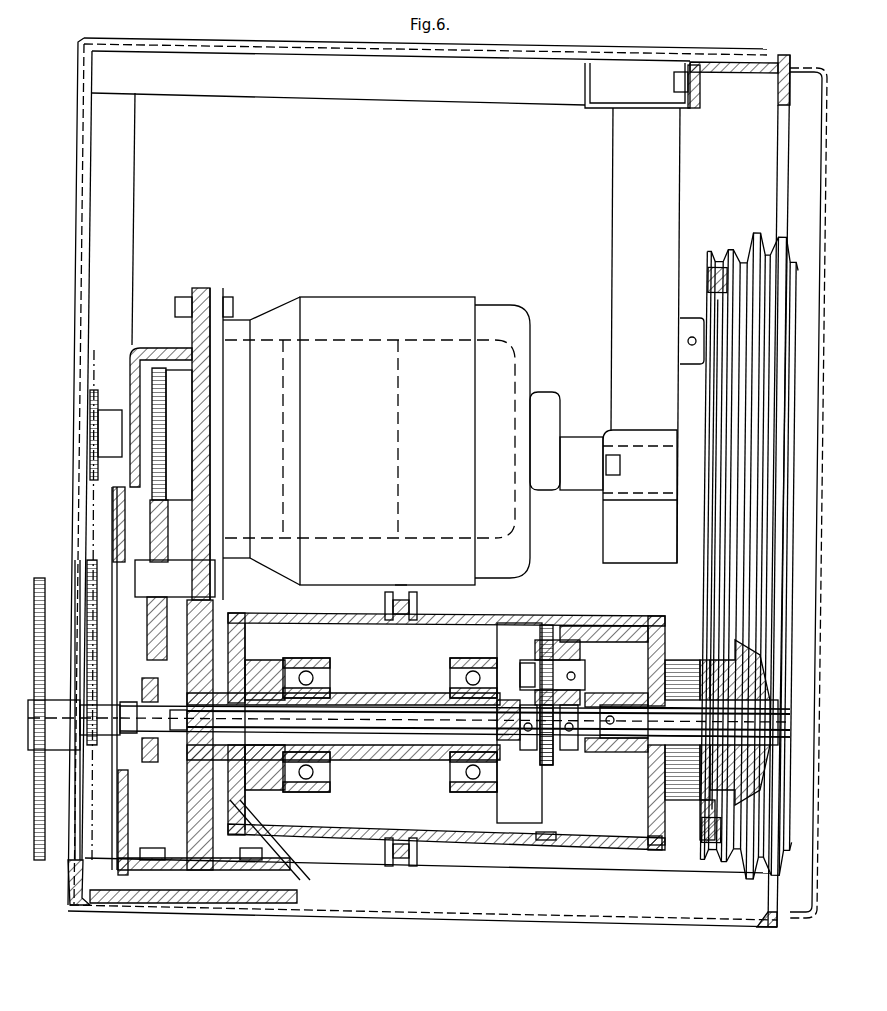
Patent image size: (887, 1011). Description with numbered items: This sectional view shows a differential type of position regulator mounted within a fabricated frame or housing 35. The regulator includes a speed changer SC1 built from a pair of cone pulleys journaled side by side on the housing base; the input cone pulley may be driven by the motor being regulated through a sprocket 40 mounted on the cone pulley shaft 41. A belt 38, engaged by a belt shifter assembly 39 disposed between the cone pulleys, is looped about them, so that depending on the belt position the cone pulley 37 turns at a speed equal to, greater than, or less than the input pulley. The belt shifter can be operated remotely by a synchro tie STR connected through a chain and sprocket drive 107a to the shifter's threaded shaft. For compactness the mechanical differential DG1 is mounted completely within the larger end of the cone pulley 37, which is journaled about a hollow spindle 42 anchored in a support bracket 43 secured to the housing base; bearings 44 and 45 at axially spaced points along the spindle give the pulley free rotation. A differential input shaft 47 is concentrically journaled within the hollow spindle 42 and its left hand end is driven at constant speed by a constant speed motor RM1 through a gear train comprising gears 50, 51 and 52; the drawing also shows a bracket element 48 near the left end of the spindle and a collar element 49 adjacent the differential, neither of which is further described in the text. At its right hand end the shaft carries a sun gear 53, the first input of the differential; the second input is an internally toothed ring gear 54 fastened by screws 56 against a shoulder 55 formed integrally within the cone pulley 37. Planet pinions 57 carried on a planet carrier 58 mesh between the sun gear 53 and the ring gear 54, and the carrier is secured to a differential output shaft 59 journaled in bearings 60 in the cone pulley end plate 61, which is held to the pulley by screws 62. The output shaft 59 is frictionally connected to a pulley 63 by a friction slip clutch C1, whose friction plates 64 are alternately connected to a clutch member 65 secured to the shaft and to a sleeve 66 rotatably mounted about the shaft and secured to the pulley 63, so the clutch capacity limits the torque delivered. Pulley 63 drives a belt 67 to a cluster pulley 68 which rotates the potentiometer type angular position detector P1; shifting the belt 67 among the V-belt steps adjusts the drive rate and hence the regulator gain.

The housing 35 is at (762, 922).
The angular position detector P1 is at (612, 186).
The constant speed motor RM1 is at (470, 300).
The synchro tie STR is at (386, 340).
The pulley 68 is at (757, 236).
The belt 67 is at (724, 521).
The cone pulley 37 is at (308, 615).
The support bracket 43 is at (240, 668).
The cone pulley end plate 61 is at (656, 614).
The hollow spindle 42 is at (387, 694).
The differential input shaft 47 is at (390, 738).
The bearing 44 is at (312, 670).
The bearing 45 is at (447, 669).
The belt 38 is at (390, 605).
The belt shifter assembly 39 is at (452, 606).
The internally toothed ring gear 54 is at (549, 624).
The speed changer SC1 is at (622, 608).
The planet pinion 57 is at (565, 650).
The planet carrier 58 is at (575, 690).
The bearing 60 is at (638, 688).
The clutch member 65 is at (672, 690).
The friction plate 64 is at (680, 770).
The pulley 63 is at (750, 658).
The sleeve 66 is at (776, 714).
The differential output shaft 59 is at (776, 732).
The slip clutch C1 is at (693, 800).
The screw 62 is at (660, 845).
The collar 49 is at (508, 742).
The sun gear 53 is at (532, 752).
The differential DG1 is at (550, 762).
The screw 56 is at (574, 752).
The shoulder 55 is at (545, 842).
The chain and sprocket drive 107a is at (95, 388).
The gear 52 is at (152, 492).
The gear 51 is at (150, 630).
The gear 50 is at (148, 678).
The bracket 48 is at (180, 740).
The sprocket 40 is at (40, 578).
The cone pulley shaft 41 is at (57, 750).